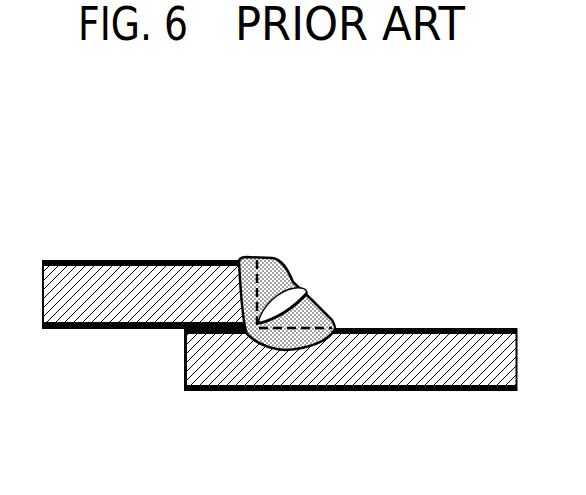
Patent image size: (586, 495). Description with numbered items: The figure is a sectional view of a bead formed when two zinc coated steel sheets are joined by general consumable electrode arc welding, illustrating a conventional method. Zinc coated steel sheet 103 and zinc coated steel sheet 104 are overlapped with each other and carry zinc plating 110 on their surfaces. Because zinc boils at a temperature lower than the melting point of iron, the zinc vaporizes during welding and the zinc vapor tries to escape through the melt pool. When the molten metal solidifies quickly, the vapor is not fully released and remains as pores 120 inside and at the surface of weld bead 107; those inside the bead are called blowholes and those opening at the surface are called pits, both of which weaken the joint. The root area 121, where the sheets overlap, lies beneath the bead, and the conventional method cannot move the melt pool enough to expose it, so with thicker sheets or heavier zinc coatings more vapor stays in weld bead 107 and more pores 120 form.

The zinc coated steel sheet 103 is at (117, 288).
The zinc coated steel sheet 104 is at (430, 368).
The weld bead 107 is at (327, 310).
The zinc plating 110 is at (125, 328).
The pores 120 is at (296, 300).
The root area 121 is at (258, 330).